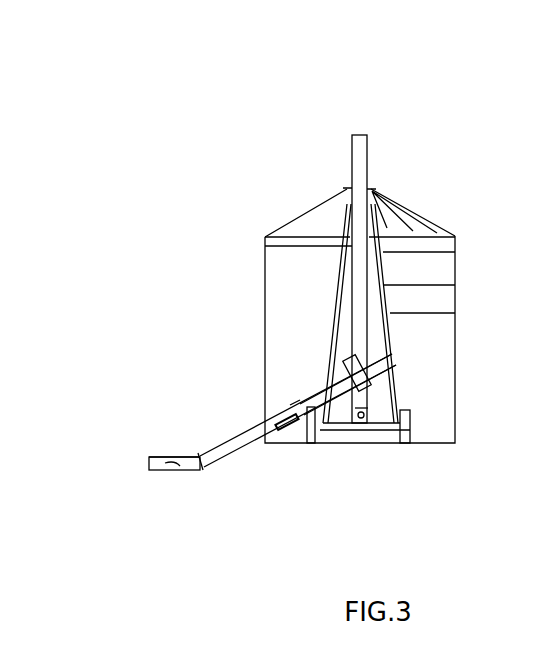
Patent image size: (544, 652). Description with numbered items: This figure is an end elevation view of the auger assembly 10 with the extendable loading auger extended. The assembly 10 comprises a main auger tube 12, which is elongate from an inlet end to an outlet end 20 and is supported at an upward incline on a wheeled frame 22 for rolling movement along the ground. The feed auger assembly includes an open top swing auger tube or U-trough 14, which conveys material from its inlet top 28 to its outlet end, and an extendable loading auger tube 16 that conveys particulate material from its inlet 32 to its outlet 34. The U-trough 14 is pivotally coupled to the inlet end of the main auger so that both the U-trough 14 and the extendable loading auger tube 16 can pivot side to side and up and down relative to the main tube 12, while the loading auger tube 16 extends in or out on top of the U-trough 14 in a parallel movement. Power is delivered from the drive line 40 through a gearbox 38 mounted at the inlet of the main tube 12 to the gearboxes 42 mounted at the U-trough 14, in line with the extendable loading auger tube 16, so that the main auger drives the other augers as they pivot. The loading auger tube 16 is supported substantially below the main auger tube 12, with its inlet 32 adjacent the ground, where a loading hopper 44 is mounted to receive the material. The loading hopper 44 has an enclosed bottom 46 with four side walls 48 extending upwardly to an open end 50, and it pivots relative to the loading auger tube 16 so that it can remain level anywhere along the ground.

The auger assembly 10 is at (366, 57).
The main auger tube 12 is at (357, 246).
The U-trough 14 is at (327, 412).
The extendable loading auger tube 16 is at (254, 422).
The outlet end 20 is at (369, 151).
The wheeled frame 22 is at (457, 249).
The inlet top 28 is at (277, 437).
The inlet 32 is at (203, 450).
The outlet 34 is at (298, 410).
The gearbox 38 is at (372, 404).
The drive line 40 is at (365, 417).
The gearboxes 42 is at (390, 355).
The loading hopper 44 is at (70, 477).
The enclosed bottom 46 is at (172, 470).
The side walls 48 is at (167, 457).
The open end 50 is at (164, 432).